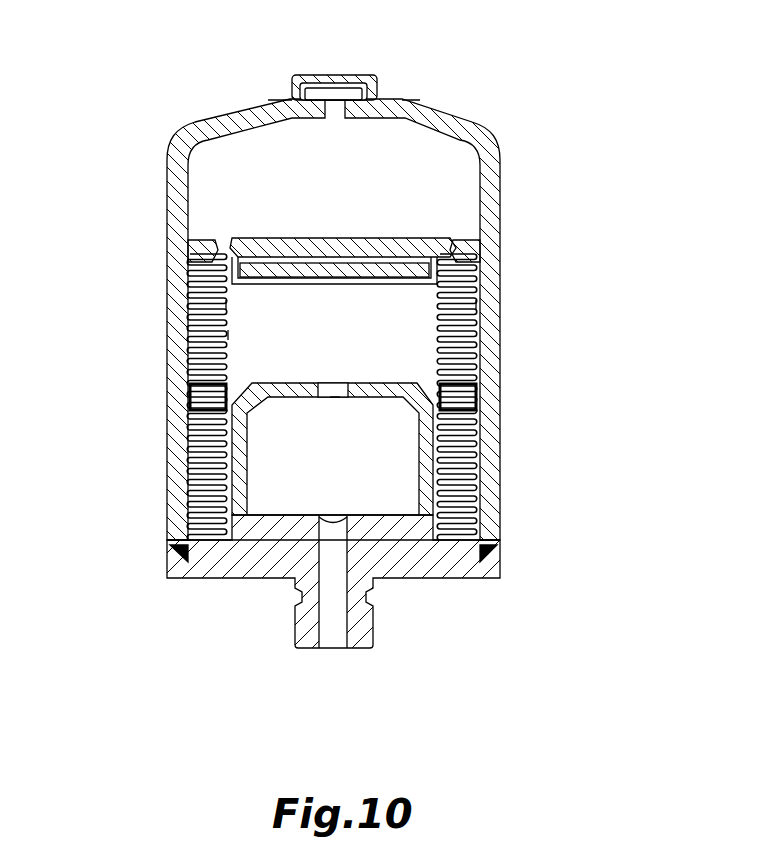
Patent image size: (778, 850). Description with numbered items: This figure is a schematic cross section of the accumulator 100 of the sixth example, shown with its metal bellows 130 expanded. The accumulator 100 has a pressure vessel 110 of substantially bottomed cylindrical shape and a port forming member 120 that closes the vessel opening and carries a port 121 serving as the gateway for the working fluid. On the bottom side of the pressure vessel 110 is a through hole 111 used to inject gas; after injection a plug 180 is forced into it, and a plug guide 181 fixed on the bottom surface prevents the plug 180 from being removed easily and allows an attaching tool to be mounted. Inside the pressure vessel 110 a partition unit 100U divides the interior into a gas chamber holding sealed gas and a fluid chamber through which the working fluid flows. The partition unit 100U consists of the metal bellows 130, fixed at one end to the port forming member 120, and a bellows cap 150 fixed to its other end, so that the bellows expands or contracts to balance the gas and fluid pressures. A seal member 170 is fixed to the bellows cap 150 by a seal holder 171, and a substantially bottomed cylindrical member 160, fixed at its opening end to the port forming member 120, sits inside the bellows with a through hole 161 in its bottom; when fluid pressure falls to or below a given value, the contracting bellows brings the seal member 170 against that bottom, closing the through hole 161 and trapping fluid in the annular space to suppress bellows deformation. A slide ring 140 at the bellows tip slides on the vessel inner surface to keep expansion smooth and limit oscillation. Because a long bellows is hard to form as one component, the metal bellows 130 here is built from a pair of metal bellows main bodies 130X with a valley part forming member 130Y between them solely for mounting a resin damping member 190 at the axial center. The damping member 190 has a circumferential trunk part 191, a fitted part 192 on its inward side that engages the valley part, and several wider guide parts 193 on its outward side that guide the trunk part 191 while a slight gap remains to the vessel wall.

The accumulator 100 is at (332, 359).
The partition unit 100U is at (229, 205).
The pressure vessel 110 is at (373, 303).
The through hole 111 is at (348, 120).
The port forming member 120 is at (333, 613).
The port 121 is at (326, 640).
The metal bellows 130 is at (389, 397).
The metal bellows main body 130X is at (482, 322).
The valley part forming member 130Y is at (250, 392).
The slide ring 140 is at (190, 245).
The bellows cap 150 is at (405, 242).
The substantially bottomed cylindrical member 160 is at (407, 433).
The through hole 161 is at (340, 392).
The seal member 170 is at (265, 322).
The seal holder 171 is at (230, 266).
The plug 180 is at (332, 57).
The plug guide 181 is at (314, 75).
The damping member 190 is at (338, 400).
The trunk part 191 is at (478, 380).
The fitted part 192 is at (437, 396).
The guide part 193 is at (480, 407).